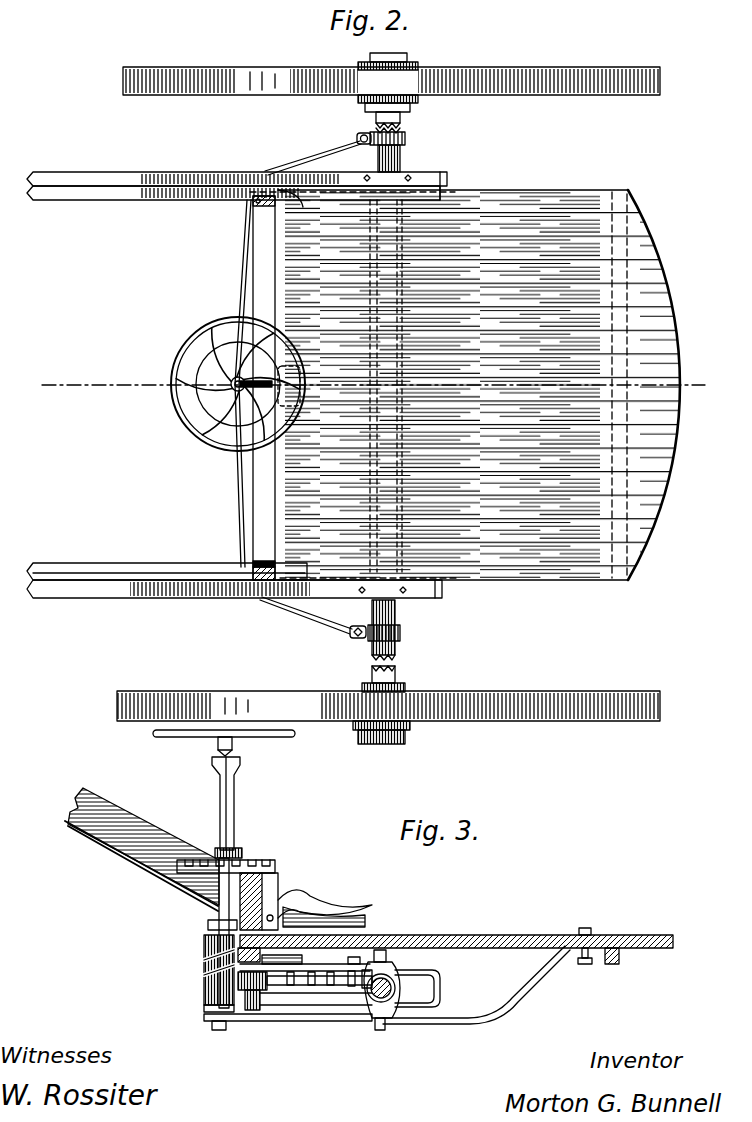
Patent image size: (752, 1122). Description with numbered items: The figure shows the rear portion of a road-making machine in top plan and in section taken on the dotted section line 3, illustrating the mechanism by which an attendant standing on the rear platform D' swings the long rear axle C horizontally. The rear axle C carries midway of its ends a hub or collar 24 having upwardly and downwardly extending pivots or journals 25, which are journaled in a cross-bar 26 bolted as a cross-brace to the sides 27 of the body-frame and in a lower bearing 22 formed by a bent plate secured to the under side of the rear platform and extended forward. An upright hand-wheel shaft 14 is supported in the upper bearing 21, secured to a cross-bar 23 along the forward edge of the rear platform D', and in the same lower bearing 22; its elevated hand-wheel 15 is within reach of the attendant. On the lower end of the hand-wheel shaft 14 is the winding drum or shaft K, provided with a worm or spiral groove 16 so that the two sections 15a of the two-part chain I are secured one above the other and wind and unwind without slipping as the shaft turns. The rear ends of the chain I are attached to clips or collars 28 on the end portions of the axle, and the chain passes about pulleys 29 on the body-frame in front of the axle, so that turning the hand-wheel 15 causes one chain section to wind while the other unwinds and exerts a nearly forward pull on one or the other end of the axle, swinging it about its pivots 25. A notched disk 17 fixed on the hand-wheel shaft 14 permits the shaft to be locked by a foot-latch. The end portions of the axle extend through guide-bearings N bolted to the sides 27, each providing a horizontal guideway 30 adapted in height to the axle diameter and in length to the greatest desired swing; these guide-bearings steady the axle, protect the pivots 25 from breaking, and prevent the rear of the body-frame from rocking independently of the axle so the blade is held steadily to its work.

In FIG. 2, the section line 3 is at (381, 386).
In FIG. 2, the hand-wheel shaft 14 is at (212, 400).
In FIG. 3, the hand-wheel shaft 14 is at (220, 820).
In FIG. 2, the hand-wheel 15 is at (175, 348).
In FIG. 3, the hand-wheel 15 is at (292, 739).
In FIG. 2, the chain section 15a is at (243, 262).
In FIG. 3, the chain section 15a is at (330, 990).
In FIG. 3, the worm or spiral groove 16 is at (203, 952).
In FIG. 2, the notched disk 17 is at (205, 410).
In FIG. 3, the notched disk 17 is at (255, 862).
In FIG. 3, the bearing 21 is at (206, 924).
In FIG. 3, the bearing 22 is at (440, 1024).
In FIG. 2, the cross-bar 23 is at (258, 498).
In FIG. 3, the cross-bar 23 is at (218, 898).
In FIG. 3, the hub or collar 24 is at (400, 988).
In FIG. 3, the pivots or journals 25 is at (386, 950).
In FIG. 3, the cross-bar 26 is at (418, 955).
In FIG. 2, the sides of the body-frame 27 is at (237, 385).
In FIG. 3, the sides of the body-frame 27 is at (130, 830).
In FIG. 2, the clips or collars 28 is at (416, 648).
In FIG. 3, the clips or collars 28 is at (352, 990).
In FIG. 2, the pulleys 29 is at (250, 200).
In FIG. 3, the pulleys 29 is at (282, 1008).
In FIG. 3, the horizontal guideway 30 is at (305, 1008).
In FIG. 2, the two-part chain I is at (210, 480).
In FIG. 3, the two-part chain I is at (278, 900).
In FIG. 2, the long rear axle C is at (398, 618).
In FIG. 3, the winding drum or shaft K is at (203, 980).
In FIG. 3, the guide-bearings N is at (295, 1006).
In FIG. 3, the rear platform D' is at (456, 937).